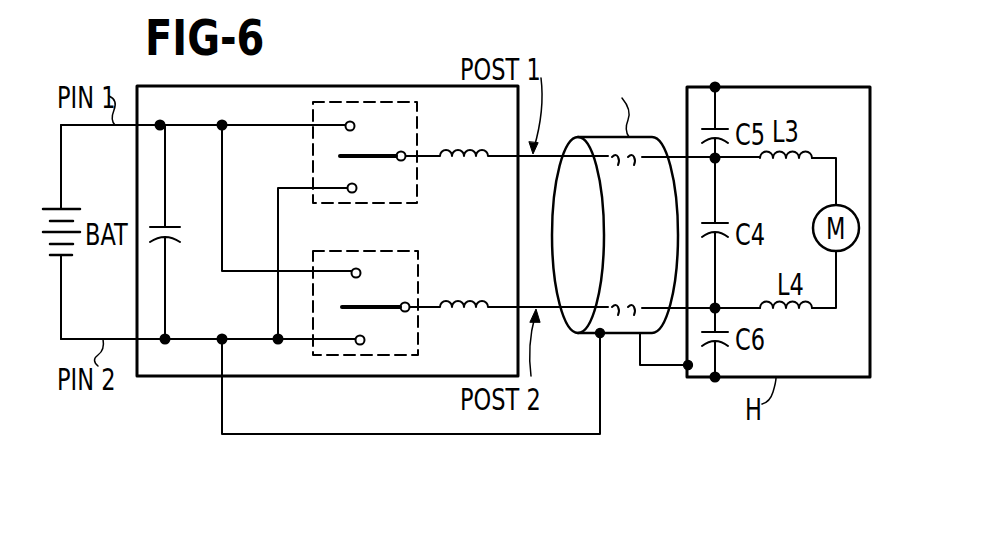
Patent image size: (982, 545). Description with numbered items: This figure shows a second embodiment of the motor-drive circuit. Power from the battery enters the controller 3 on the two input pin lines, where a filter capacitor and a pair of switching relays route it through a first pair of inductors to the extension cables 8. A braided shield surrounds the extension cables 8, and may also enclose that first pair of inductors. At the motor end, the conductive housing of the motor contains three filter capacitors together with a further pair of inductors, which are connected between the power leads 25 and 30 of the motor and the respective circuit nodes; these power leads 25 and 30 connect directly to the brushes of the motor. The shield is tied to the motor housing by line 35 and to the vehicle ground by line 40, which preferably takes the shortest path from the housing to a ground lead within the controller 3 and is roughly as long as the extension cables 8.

The controller 3 is at (355, 86).
The extension cables 8 is at (561, 52).
The power lead 25 is at (827, 152).
The power lead 30 is at (830, 312).
The line 35 is at (656, 362).
The line 40 is at (408, 434).